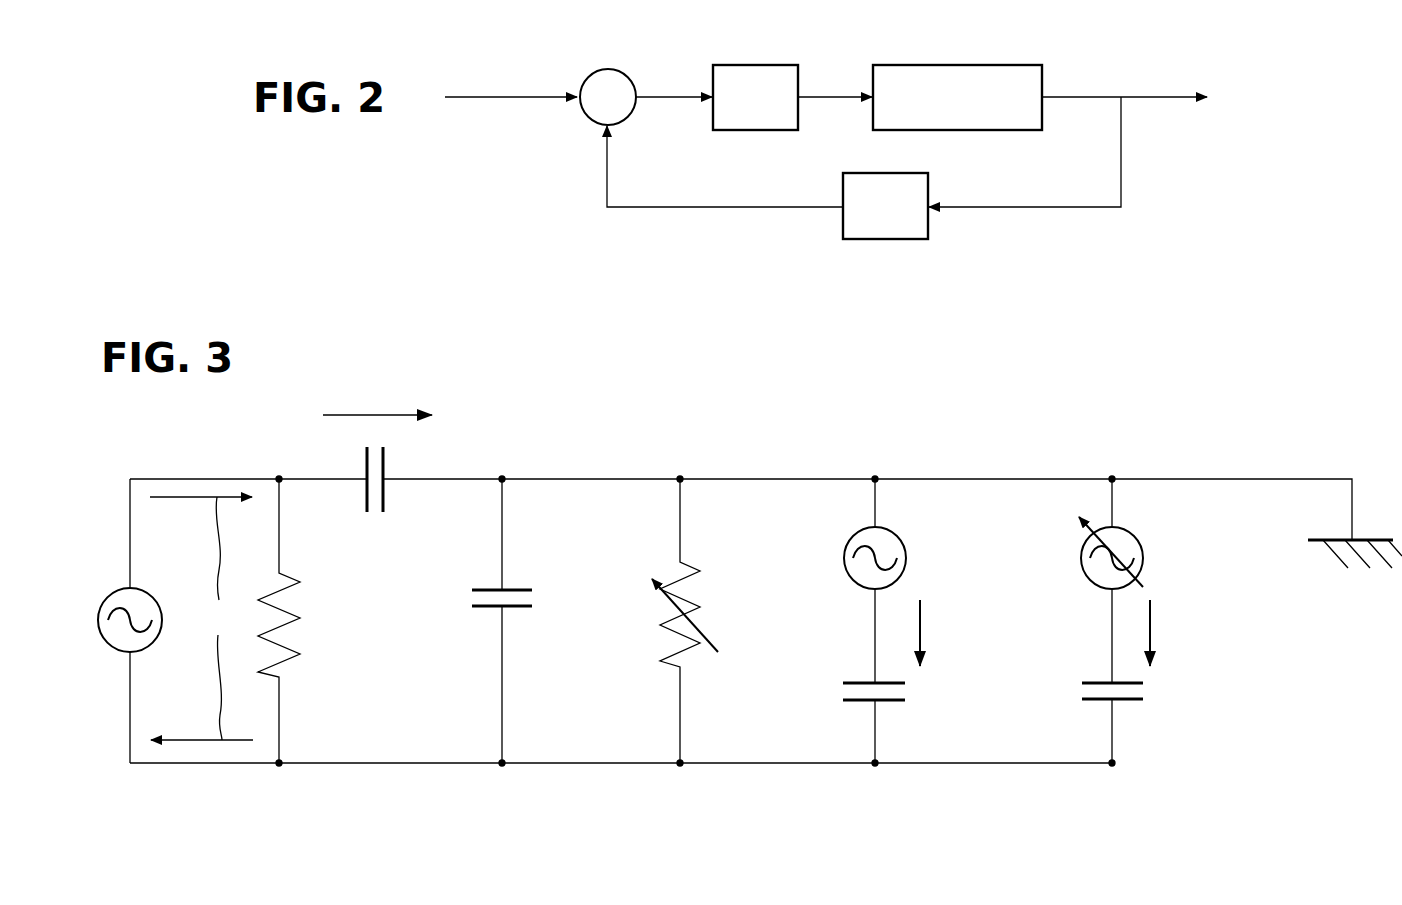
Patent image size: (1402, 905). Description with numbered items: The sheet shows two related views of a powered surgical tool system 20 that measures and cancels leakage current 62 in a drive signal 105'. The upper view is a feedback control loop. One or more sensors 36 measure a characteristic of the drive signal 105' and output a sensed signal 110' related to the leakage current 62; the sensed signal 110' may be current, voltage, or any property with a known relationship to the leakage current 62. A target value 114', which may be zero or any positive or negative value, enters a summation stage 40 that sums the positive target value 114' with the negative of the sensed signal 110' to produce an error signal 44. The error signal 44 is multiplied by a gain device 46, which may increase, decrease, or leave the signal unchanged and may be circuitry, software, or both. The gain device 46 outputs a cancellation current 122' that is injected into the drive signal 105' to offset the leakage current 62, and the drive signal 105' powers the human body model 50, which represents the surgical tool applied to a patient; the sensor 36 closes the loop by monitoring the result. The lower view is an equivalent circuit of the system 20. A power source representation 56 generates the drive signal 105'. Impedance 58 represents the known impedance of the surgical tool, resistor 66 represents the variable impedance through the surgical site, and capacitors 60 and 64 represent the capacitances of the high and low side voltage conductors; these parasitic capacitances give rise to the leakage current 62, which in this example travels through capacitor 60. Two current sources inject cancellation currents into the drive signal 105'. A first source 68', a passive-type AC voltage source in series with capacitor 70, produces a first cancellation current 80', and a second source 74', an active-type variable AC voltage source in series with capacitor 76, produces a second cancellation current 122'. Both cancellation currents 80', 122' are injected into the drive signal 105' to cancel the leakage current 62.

In FIG. 3, the powered surgical tool system 20 is at (766, 447).
In FIG. 2, the sensor 36 is at (885, 206).
In FIG. 2, the summation stage 40 is at (607, 68).
In FIG. 2, the error signal 44 is at (657, 96).
In FIG. 2, the gain device 46 is at (755, 97).
In FIG. 2, the human body model 50 is at (957, 97).
In FIG. 3, the power source representation 56 is at (113, 597).
In FIG. 3, the impedance 58 is at (300, 617).
In FIG. 3, the capacitor 60 is at (365, 497).
In FIG. 3, the leakage current 62 is at (373, 413).
In FIG. 3, the capacitor 64 is at (520, 589).
In FIG. 3, the resistor 66 is at (700, 625).
In FIG. 3, the first source 68' is at (896, 581).
In FIG. 3, the capacitor 70 is at (860, 683).
In FIG. 3, the second source 74' is at (1152, 603).
In FIG. 3, the capacitor 76 is at (1093, 683).
In FIG. 3, the first cancellation current 80' is at (960, 633).
In FIG. 2, the drive signal 105' is at (1068, 117).
In FIG. 3, the drive signal 105' is at (201, 618).
In FIG. 2, the sensed signal 110' is at (725, 166).
In FIG. 2, the target value 114' is at (506, 65).
In FIG. 2, the cancellation current 122' is at (835, 62).
In FIG. 3, the cancellation current 122' is at (1197, 633).